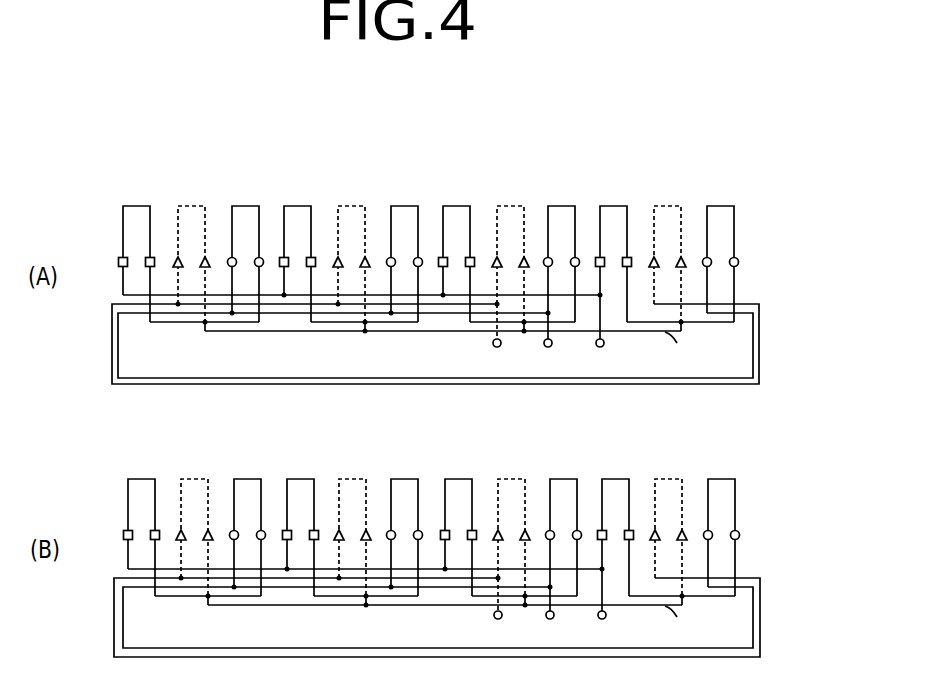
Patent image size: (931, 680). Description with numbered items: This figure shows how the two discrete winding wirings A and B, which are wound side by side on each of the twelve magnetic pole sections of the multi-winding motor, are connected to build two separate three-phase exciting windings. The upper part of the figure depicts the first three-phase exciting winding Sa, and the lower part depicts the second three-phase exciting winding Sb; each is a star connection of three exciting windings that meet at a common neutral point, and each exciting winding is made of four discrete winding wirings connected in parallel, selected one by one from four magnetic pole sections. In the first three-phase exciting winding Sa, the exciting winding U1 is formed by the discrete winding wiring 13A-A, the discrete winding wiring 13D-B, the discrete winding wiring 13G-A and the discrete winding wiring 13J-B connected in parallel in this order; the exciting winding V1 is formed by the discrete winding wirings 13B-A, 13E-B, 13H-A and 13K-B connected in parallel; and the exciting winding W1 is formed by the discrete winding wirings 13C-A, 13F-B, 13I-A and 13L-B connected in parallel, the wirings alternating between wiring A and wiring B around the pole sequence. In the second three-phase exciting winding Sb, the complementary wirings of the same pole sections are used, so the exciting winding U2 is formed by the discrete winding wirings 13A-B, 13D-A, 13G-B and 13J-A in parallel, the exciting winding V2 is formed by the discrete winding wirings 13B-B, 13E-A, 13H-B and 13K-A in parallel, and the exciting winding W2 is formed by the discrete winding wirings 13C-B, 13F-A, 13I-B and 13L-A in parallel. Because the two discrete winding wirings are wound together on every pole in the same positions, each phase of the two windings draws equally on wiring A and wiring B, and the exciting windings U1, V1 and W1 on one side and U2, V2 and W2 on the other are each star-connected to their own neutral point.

The first three-phase exciting winding Sa is at (104, 203).
The second three-phase exciting winding Sb is at (114, 482).
The discrete winding wiring B at magnetic pole section 13L 13L-B is at (136, 206).
The discrete winding wiring B at magnetic pole section 13K 13K-B is at (192, 206).
The discrete winding wiring B at magnetic pole section 13J 13J-B is at (246, 206).
The discrete winding wiring A at magnetic pole section 13I 13I-A is at (298, 206).
The discrete winding wiring A at magnetic pole section 13H 13H-A is at (352, 206).
The discrete winding wiring A at magnetic pole section 13G 13G-A is at (404, 206).
The discrete winding wiring B at magnetic pole section 13F 13F-B is at (456, 206).
The discrete winding wiring B at magnetic pole section 13E 13E-B is at (510, 206).
The discrete winding wiring B at magnetic pole section 13D 13D-B is at (562, 206).
The discrete winding wiring A at magnetic pole section 13C 13C-A is at (614, 206).
The discrete winding wiring A at magnetic pole section 13B 13B-A is at (668, 206).
The discrete winding wiring A at magnetic pole section 13A 13A-A is at (720, 206).
The discrete winding wiring A at magnetic pole section 13L 13L-A is at (142, 479).
The discrete winding wiring A at magnetic pole section 13K 13K-A is at (194, 479).
The discrete winding wiring A at magnetic pole section 13J 13J-A is at (248, 479).
The discrete winding wiring B at magnetic pole section 13I 13I-B is at (300, 479).
The discrete winding wiring B at magnetic pole section 13H 13H-B is at (352, 479).
The discrete winding wiring B at magnetic pole section 13G 13G-B is at (404, 479).
The discrete winding wiring A at magnetic pole section 13F 13F-A is at (458, 479).
The discrete winding wiring A at magnetic pole section 13E 13E-A is at (512, 479).
The discrete winding wiring A at magnetic pole section 13D 13D-A is at (564, 479).
The discrete winding wiring B at magnetic pole section 13C 13C-B is at (616, 479).
The discrete winding wiring B at magnetic pole section 13B 13B-B is at (668, 479).
The discrete winding wiring B at magnetic pole section 13A 13A-B is at (722, 479).
The exciting winding V1 is at (500, 338).
The exciting winding U1 is at (551, 343).
The exciting winding W1 is at (607, 334).
The exciting winding V2 is at (501, 612).
The exciting winding U2 is at (552, 617).
The exciting winding W2 is at (608, 608).